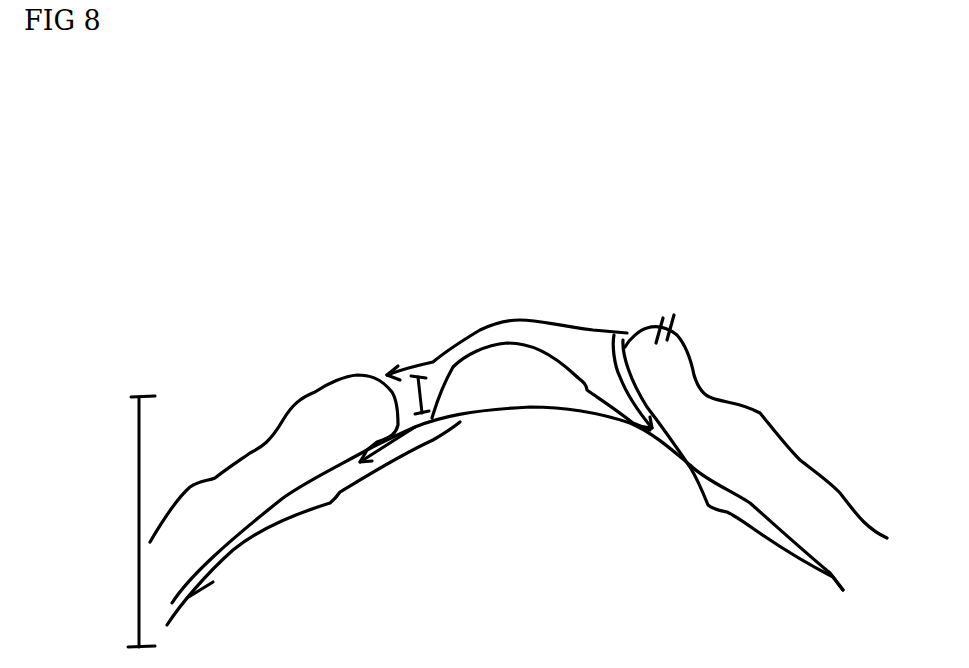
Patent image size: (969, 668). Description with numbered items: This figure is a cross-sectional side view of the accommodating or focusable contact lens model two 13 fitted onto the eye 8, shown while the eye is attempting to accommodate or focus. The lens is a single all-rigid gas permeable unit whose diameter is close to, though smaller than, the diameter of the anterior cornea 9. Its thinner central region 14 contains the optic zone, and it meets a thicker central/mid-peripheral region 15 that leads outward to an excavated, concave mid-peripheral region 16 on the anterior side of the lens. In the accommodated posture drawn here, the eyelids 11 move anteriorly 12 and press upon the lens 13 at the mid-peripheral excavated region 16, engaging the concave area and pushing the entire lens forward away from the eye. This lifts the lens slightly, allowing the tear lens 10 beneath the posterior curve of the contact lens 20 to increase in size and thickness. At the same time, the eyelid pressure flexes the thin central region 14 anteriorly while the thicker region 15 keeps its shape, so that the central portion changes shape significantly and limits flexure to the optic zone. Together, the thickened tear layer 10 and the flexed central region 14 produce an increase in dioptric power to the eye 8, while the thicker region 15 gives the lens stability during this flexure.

The eye 8 is at (125, 521).
The anterior cornea 9 is at (505, 482).
The tear lens 10 is at (541, 386).
The eyelids 11 is at (518, 434).
The anterior movement of eyelids 12 is at (262, 383).
The accommodating contact lens model two 13 is at (470, 258).
The central region 14 is at (540, 312).
The thicker central/mid-peripheral region 15 is at (430, 390).
The excavated concave mid-peripheral region 16 is at (603, 355).
The posterior curve of the contact lens 20 is at (535, 340).